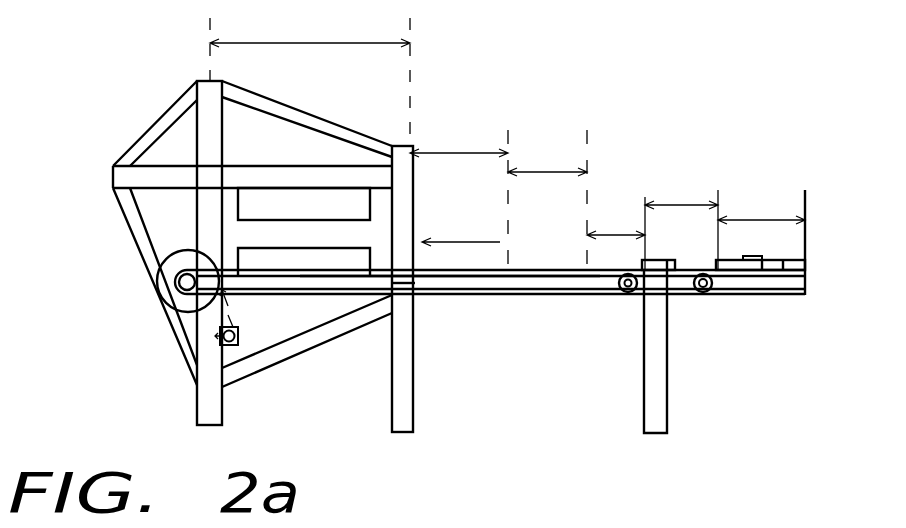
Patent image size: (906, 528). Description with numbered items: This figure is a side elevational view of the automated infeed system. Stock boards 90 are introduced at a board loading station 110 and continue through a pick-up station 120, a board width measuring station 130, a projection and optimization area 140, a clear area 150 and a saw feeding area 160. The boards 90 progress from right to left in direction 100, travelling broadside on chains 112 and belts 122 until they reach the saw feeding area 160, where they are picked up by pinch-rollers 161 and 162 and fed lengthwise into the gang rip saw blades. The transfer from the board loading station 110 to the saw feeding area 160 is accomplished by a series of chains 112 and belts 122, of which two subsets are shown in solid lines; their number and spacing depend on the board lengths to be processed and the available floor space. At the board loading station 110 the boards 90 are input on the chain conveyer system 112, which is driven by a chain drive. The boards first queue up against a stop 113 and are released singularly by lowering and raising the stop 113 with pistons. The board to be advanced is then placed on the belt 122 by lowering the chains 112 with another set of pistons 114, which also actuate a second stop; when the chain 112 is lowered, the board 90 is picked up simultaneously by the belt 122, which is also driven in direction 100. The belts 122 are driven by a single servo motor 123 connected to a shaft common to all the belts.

The boards 90 is at (733, 263).
The direction 100 is at (461, 221).
The board loading station 110 is at (761, 206).
The chains 112 is at (777, 291).
The stop 113 is at (722, 290).
The pistons 114 is at (628, 292).
The pick-up station 120 is at (681, 221).
The belts 122 is at (489, 280).
The servo motor 123 is at (238, 343).
The board width measuring station 130 is at (619, 228).
The projection and optimization area 140 is at (547, 197).
The clear area 150 is at (459, 189).
The saw feeding area 160 is at (310, 78).
The pinch-roller 161 is at (248, 203).
The pinch-roller 162 is at (253, 258).